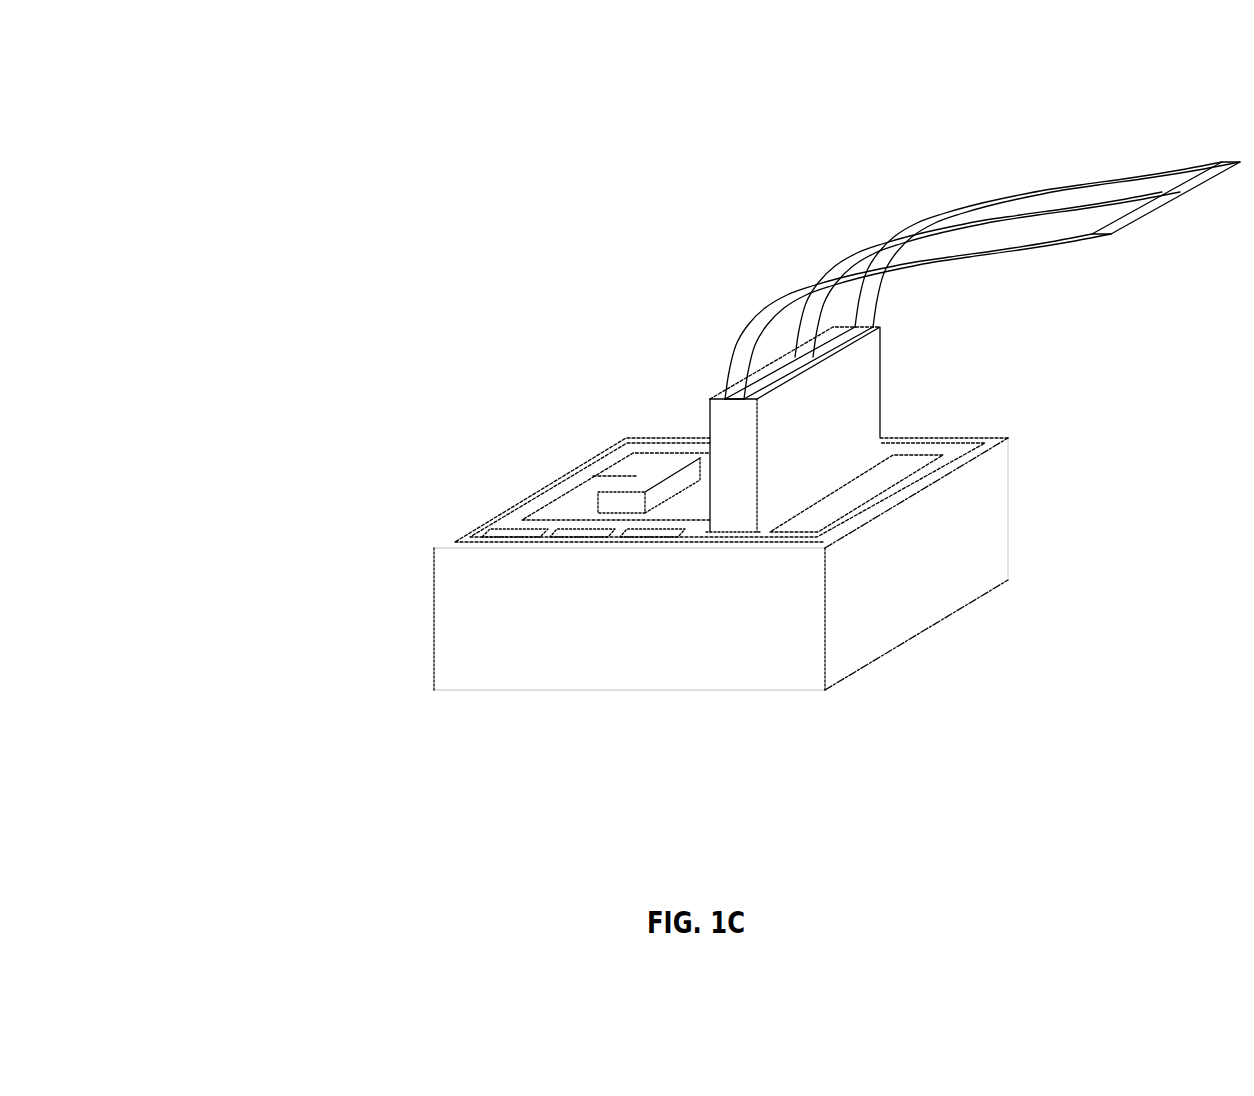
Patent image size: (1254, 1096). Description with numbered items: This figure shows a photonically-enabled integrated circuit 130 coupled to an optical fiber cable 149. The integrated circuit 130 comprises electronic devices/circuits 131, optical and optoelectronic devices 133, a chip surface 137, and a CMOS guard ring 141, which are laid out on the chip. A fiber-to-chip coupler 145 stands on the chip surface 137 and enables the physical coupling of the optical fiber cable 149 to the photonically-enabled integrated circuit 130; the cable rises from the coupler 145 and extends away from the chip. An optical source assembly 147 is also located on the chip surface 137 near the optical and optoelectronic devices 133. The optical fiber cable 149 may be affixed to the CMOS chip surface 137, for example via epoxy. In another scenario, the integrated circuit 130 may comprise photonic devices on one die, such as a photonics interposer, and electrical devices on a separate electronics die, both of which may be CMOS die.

The photonically-enabled integrated circuit 130 is at (280, 96).
The electronic devices/circuits 131 is at (638, 538).
The optical and optoelectronic devices 133 is at (592, 520).
The chip surface 137 is at (572, 470).
The CMOS guard ring 141 is at (993, 437).
The fiber-to-chip coupler 145 is at (840, 439).
The optical source assembly 147 is at (658, 468).
The optical fiber cable 149 is at (1040, 187).